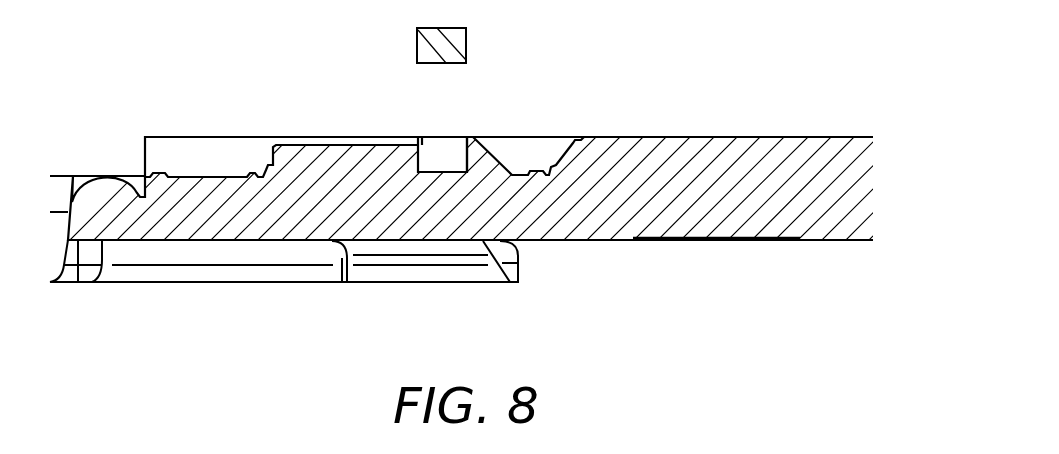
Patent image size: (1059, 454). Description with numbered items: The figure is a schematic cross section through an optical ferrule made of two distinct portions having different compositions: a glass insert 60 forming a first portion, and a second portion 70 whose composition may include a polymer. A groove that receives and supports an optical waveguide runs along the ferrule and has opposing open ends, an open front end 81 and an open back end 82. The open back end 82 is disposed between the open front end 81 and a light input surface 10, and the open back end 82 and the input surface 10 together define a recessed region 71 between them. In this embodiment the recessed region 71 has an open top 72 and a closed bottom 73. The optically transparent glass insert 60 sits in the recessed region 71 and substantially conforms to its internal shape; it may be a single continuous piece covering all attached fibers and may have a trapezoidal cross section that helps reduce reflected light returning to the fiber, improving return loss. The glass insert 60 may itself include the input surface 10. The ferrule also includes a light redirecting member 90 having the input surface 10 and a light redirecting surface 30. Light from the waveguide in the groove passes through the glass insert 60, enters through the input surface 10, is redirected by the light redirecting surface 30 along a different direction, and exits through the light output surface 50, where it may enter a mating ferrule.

The light input surface 10 is at (467, 153).
The light redirecting surface 30 is at (497, 160).
The light output surface 50 is at (535, 241).
The glass insert 60 is at (455, 40).
The second portion 70 is at (706, 160).
The recessed region 71 is at (437, 137).
The open top 72 is at (453, 135).
The closed bottom 73 is at (430, 172).
The open front end 81 is at (272, 157).
The open back end 82 is at (410, 163).
The light redirecting member 90 is at (527, 198).